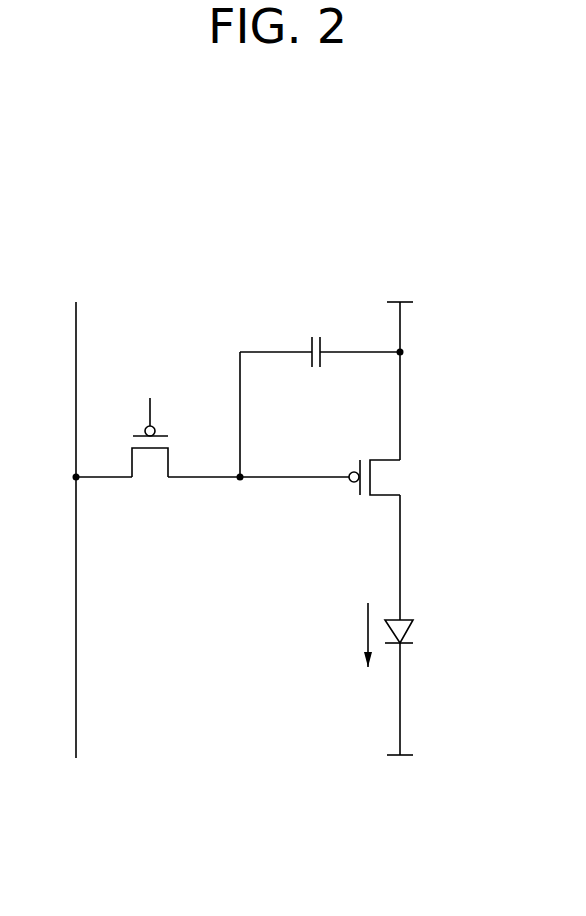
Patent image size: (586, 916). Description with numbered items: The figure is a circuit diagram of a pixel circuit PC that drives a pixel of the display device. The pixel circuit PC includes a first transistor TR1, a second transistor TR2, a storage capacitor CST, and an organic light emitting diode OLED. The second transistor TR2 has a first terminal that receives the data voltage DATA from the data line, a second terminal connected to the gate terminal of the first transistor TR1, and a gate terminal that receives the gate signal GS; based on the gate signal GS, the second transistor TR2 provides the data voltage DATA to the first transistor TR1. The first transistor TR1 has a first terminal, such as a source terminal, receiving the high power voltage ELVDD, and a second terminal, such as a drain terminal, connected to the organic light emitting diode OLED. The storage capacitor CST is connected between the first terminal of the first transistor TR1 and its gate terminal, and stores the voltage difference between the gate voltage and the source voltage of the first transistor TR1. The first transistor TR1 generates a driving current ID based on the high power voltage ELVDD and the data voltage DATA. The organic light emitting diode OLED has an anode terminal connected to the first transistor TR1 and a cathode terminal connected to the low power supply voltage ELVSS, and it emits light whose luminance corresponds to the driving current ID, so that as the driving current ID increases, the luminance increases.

The pixel circuit PC is at (489, 283).
The data voltage DATA is at (76, 513).
The gate signal GS is at (151, 402).
The second transistor TR2 is at (149, 473).
The first transistor TR1 is at (394, 477).
The storage capacitor CST is at (320, 367).
The high power voltage ELVDD is at (400, 364).
The low power supply voltage ELVSS is at (397, 718).
The organic light emitting diode OLED is at (429, 631).
The driving current ID is at (353, 635).